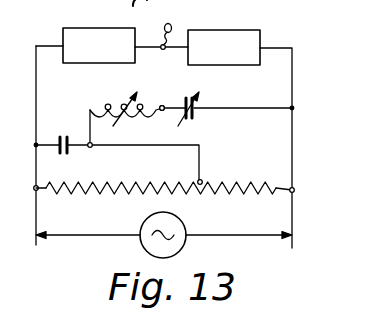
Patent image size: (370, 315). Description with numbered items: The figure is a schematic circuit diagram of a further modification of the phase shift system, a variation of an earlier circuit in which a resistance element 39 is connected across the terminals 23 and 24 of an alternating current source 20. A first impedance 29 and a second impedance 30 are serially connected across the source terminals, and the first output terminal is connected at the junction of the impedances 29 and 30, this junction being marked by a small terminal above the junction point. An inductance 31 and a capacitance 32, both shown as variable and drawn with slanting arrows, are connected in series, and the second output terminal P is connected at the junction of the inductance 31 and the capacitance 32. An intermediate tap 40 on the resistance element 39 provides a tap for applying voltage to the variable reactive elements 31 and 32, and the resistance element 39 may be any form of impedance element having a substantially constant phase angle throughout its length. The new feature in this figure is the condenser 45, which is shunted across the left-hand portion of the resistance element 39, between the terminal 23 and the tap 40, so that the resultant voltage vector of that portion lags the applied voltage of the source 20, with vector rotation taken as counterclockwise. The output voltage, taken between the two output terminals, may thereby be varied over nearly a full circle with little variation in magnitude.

The first impedance 29 is at (107, 23).
The second impedance 30 is at (229, 29).
The inductance 31 is at (113, 106).
The second output terminal P is at (163, 106).
The capacitance 32 is at (194, 113).
The condenser 45 is at (61, 137).
The terminal 23 is at (34, 188).
The terminal 24 is at (294, 189).
The resistance element 39 is at (194, 192).
The intermediate tap 40 is at (202, 180).
The alternating current source 20 is at (184, 244).